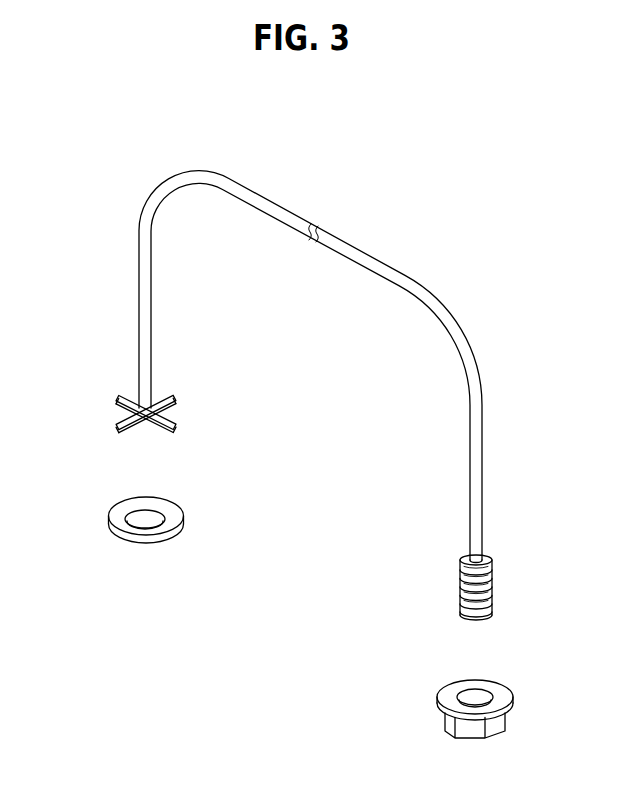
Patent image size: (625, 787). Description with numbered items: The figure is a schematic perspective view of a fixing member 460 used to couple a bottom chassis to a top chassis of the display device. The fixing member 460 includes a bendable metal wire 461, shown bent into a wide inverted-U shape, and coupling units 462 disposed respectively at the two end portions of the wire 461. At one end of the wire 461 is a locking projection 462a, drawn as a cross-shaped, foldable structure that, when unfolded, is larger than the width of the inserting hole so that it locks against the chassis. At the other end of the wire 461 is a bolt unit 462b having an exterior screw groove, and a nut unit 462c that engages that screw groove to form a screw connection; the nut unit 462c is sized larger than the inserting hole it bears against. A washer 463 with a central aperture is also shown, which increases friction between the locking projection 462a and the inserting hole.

The fixing member 460 is at (100, 116).
The wire 461 is at (268, 208).
The coupling unit 462 is at (280, 744).
The locking projection 462a is at (120, 420).
The bolt unit 462b is at (488, 591).
The nut unit 462c is at (488, 682).
The washer 463 is at (117, 518).